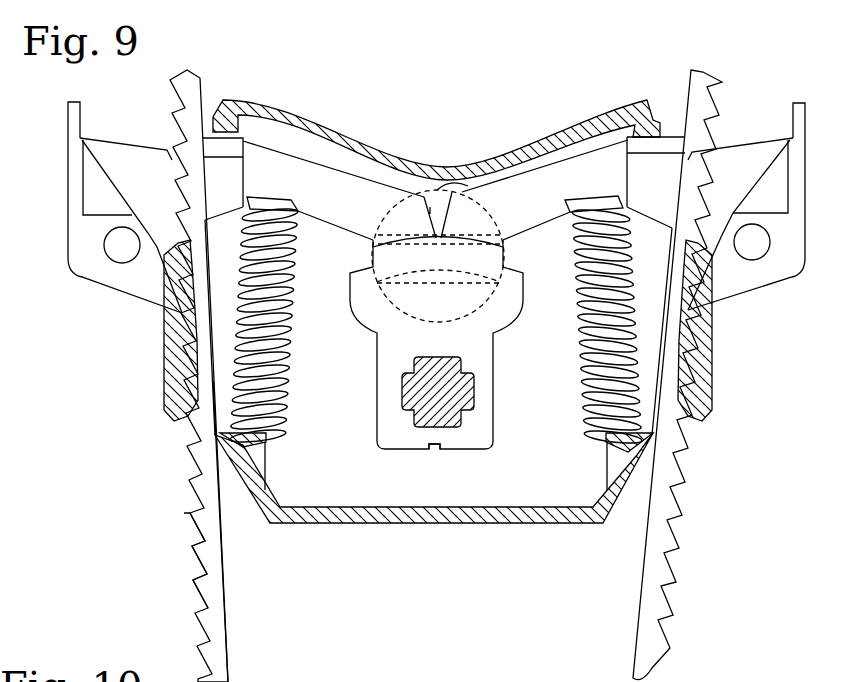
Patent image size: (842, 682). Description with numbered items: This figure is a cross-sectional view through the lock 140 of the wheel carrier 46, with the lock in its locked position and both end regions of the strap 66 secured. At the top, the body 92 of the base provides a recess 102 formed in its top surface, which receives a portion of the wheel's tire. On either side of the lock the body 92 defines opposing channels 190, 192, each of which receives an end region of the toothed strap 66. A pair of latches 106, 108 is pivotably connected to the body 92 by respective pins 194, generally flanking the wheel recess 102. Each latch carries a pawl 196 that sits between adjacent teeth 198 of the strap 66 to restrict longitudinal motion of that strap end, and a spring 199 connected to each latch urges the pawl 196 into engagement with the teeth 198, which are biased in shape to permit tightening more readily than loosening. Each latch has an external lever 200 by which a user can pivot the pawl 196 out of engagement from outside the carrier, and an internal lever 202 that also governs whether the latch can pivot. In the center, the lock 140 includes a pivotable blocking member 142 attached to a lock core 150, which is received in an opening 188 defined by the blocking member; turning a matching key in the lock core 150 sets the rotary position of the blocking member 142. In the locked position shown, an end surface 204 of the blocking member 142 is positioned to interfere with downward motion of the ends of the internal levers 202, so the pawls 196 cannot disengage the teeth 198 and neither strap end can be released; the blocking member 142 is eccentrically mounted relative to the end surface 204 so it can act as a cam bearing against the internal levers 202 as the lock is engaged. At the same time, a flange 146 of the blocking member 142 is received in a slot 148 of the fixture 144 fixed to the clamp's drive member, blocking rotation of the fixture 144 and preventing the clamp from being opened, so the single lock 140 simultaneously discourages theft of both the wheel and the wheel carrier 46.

The wheel carrier 46 is at (590, 57).
The strap 66 is at (228, 609).
The body 92 is at (283, 100).
The recess 102 is at (432, 152).
The latch 106 is at (762, 302).
The latch 108 is at (86, 300).
The lock 140 is at (356, 389).
The blocking member 142 is at (372, 357).
The fixture 144 is at (473, 194).
The flange 146 is at (362, 298).
The slot 148 is at (480, 243).
The lock core 150 is at (458, 412).
The opening 188 is at (470, 388).
The channel 190 is at (206, 118).
The channel 192 is at (680, 125).
The pin 194 is at (103, 246).
The pawl 196 is at (181, 314).
The teeth 198 is at (197, 587).
The spring 199 is at (288, 428).
The external lever 200 is at (66, 145).
The internal lever 202 is at (335, 165).
The end surface 204 is at (372, 246).